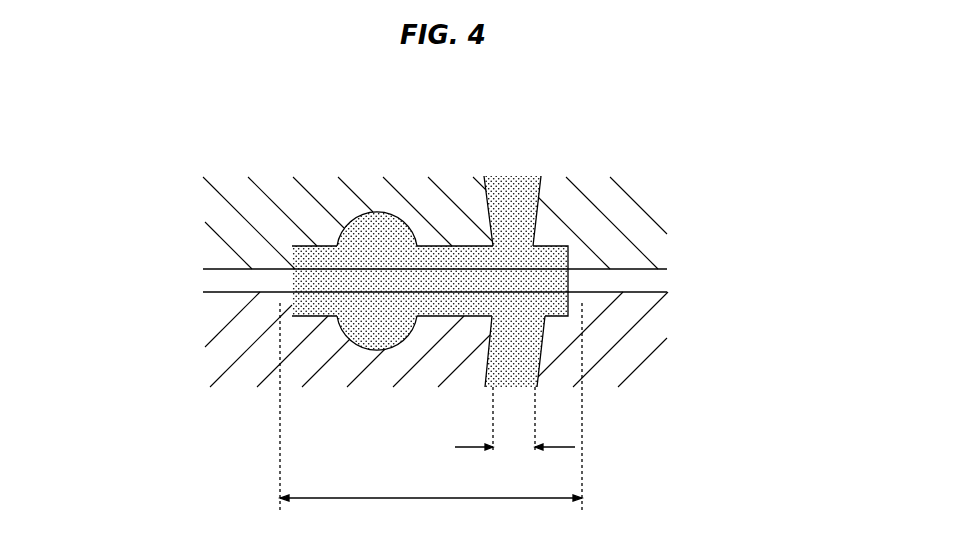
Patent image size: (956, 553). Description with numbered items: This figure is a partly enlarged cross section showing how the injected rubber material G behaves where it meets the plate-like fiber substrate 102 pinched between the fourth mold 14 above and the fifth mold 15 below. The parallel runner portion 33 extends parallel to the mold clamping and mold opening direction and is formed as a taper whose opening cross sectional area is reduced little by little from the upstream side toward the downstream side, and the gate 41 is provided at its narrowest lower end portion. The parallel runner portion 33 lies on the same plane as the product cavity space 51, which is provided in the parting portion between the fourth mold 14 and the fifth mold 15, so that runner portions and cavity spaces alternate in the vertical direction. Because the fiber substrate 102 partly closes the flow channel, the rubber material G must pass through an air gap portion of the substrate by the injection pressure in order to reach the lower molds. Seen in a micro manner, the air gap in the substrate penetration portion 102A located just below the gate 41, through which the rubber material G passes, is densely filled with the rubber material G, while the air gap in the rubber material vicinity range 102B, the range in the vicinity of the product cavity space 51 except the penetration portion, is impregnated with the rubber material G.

The fourth mold 14 is at (217, 221).
The fiber substrate 102 is at (207, 282).
The fifth mold 15 is at (213, 327).
The parallel runner portion 33 is at (540, 192).
The gate 41 is at (540, 243).
The product cavity space 51 is at (379, 350).
The rubber material G is at (511, 175).
The substrate penetration portion 102A is at (515, 435).
The rubber material vicinity range 102B is at (431, 418).